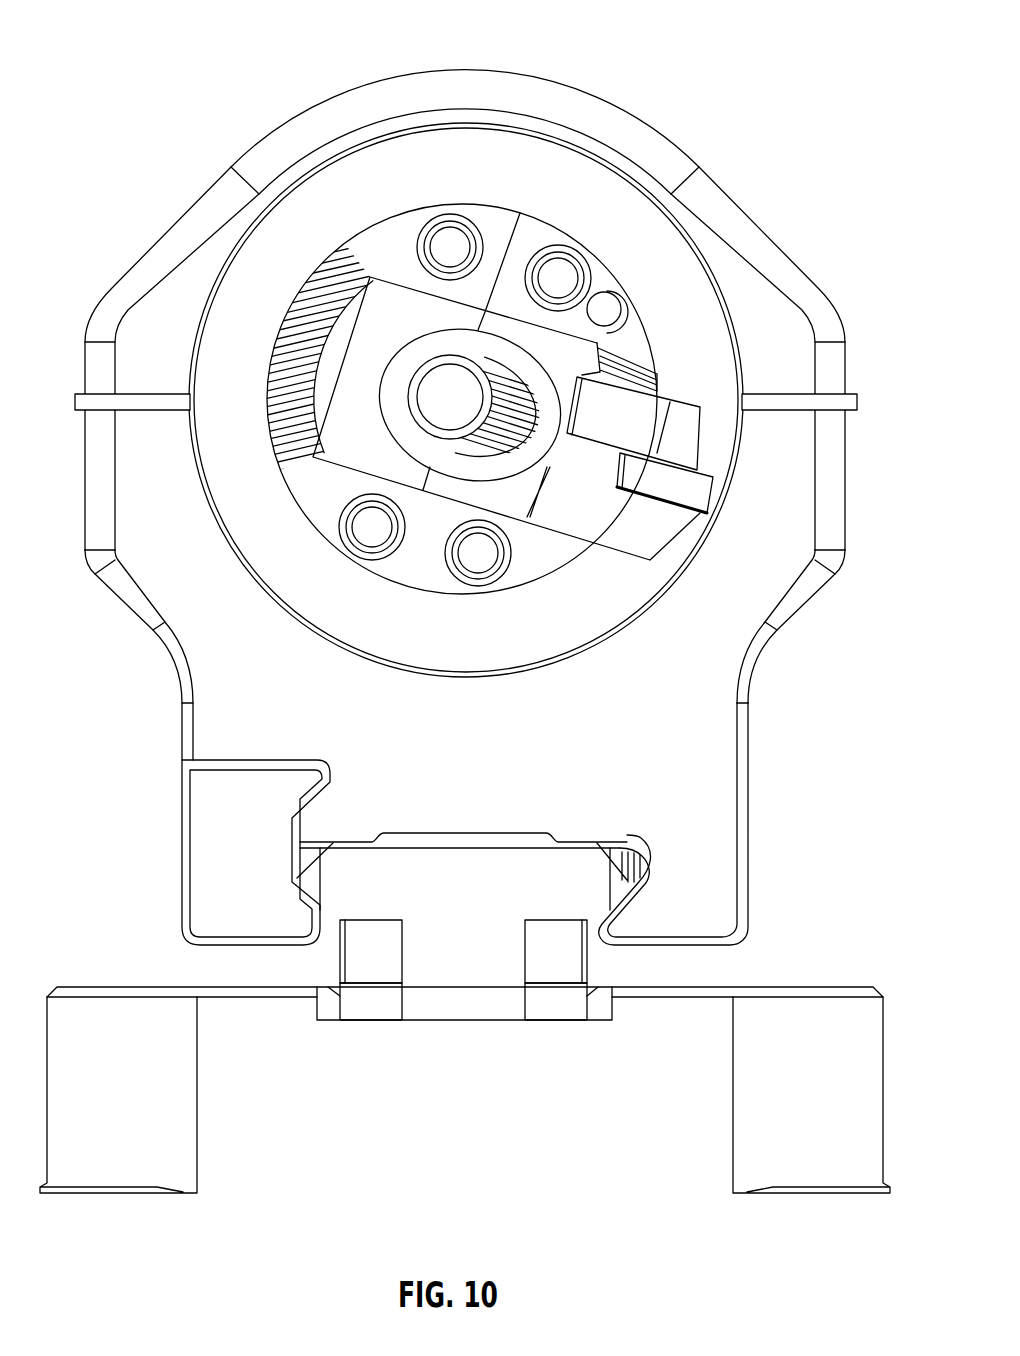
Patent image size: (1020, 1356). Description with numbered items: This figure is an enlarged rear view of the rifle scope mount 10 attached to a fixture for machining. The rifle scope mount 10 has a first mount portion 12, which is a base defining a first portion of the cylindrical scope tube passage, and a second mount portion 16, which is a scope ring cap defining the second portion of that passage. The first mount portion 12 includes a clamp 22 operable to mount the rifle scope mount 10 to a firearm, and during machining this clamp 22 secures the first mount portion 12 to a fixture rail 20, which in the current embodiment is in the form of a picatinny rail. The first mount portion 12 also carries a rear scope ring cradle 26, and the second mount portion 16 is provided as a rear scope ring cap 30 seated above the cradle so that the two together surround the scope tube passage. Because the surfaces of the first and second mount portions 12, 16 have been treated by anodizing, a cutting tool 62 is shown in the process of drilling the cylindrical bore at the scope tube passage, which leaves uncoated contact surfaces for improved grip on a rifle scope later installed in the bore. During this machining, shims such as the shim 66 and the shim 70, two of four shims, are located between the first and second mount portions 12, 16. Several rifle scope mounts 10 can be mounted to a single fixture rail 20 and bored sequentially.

The rifle scope mount 10 is at (128, 32).
The first mount portion 12 is at (760, 765).
The second mount portion 16 is at (837, 310).
The fixture rail 20 is at (307, 880).
The clamp 22 is at (185, 825).
The rear scope ring cradle 26 is at (760, 665).
The rear scope ring cap 30 is at (760, 227).
The cutting tool 62 is at (708, 330).
The shim 66 is at (857, 397).
The shim 70 is at (75, 397).